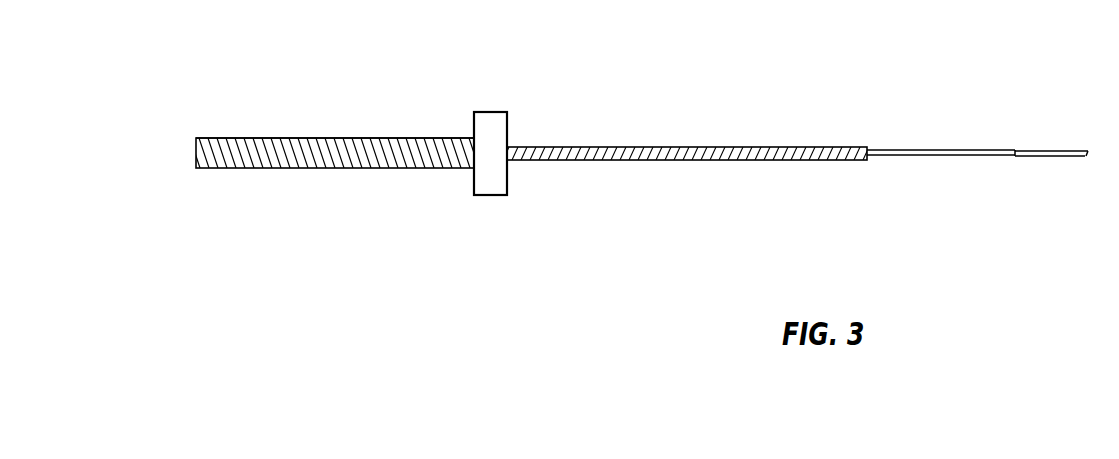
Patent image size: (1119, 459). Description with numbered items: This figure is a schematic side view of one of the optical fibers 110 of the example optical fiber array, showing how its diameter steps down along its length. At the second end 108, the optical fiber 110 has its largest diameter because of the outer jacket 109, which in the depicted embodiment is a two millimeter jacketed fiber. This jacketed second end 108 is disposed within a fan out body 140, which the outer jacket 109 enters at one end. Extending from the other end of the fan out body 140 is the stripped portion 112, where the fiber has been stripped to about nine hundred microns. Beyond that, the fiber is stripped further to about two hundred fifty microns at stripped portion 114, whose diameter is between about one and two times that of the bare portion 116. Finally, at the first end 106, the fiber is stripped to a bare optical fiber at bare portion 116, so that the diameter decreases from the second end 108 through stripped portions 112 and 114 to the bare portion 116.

The first end 106 is at (935, 147).
The second end 108 is at (374, 168).
The outer jacket 109 is at (252, 138).
The optical fibers 110 is at (373, 103).
The stripped portion 112 is at (635, 160).
The stripped portion 114 is at (952, 157).
The bare portion 116 is at (1088, 157).
The fan out body 140 is at (497, 105).